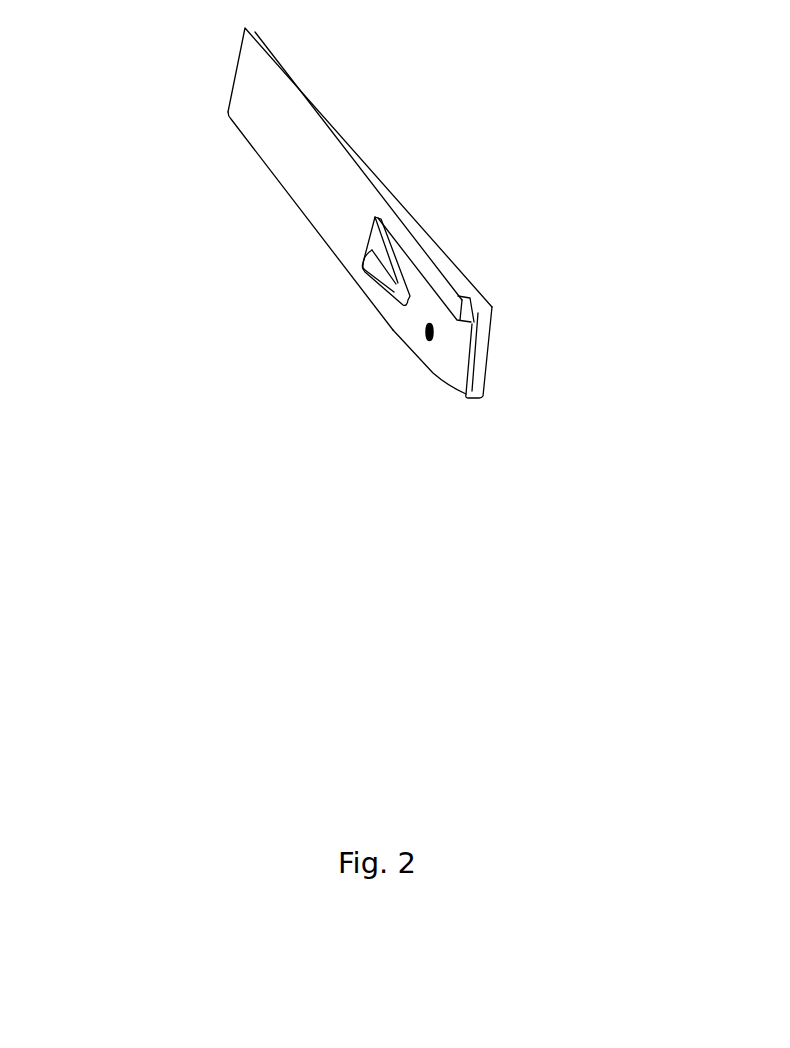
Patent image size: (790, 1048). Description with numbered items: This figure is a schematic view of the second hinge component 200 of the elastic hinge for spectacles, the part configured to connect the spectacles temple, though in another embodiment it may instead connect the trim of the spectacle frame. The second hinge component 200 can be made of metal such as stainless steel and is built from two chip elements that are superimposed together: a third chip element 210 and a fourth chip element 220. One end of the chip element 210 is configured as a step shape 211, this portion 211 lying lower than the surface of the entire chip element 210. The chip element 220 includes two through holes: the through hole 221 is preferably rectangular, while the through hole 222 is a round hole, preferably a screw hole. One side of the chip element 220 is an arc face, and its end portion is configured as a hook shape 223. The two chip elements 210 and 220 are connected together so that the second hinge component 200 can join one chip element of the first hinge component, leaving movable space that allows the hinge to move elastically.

The second hinge component 200 is at (365, 348).
The third chip element 210 is at (328, 123).
The step shape 211 is at (477, 310).
The fourth chip element 220 is at (412, 328).
The through hole 221 is at (410, 299).
The through hole 222 is at (422, 337).
The hook shape 223 is at (462, 382).